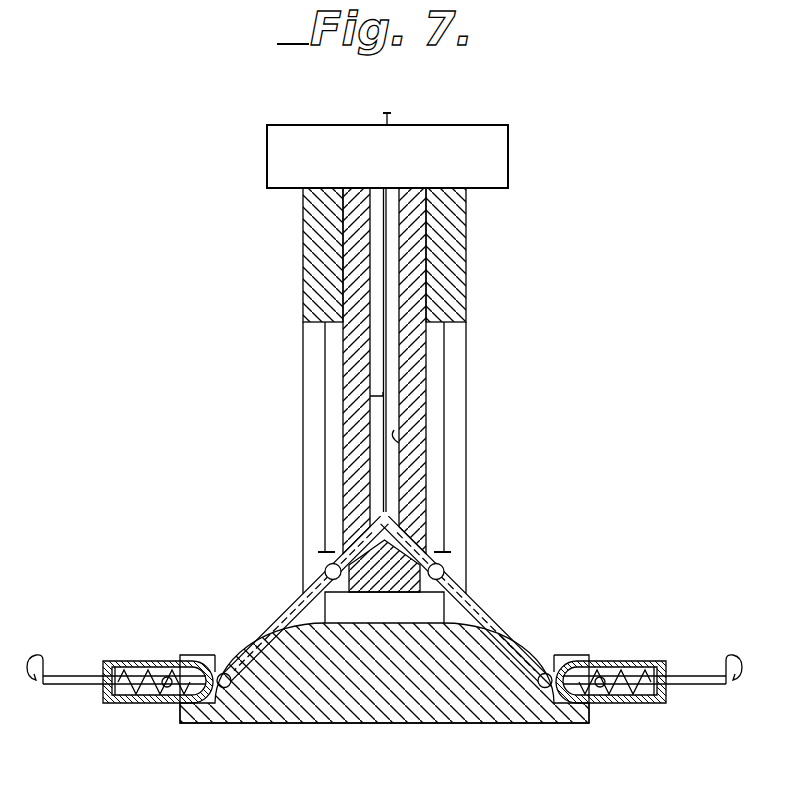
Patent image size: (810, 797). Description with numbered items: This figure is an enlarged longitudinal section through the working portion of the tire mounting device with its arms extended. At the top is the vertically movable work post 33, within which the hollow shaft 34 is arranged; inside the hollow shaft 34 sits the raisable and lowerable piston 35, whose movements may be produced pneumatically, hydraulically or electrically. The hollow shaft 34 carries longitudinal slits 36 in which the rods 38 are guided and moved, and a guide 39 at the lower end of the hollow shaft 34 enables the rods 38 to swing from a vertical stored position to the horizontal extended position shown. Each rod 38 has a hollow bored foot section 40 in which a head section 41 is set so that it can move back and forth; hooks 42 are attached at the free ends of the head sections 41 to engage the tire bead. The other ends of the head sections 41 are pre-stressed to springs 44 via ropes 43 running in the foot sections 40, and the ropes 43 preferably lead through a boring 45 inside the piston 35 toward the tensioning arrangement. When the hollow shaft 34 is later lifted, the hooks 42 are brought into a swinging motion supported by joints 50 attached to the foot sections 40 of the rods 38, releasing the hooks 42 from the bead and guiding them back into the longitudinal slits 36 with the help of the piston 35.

The work post 33 is at (483, 160).
The hollow shaft 34 is at (447, 242).
The piston 35 is at (415, 402).
The longitudinal slits 36 is at (430, 352).
The rods 38 is at (281, 613).
The guide 39 is at (280, 660).
The foot section 40 is at (140, 704).
The head section 41 is at (56, 685).
The hooks 42 is at (44, 662).
The ropes 43 is at (370, 395).
The springs 44 is at (632, 700).
The boring 45 is at (399, 443).
The joints 50 is at (217, 673).